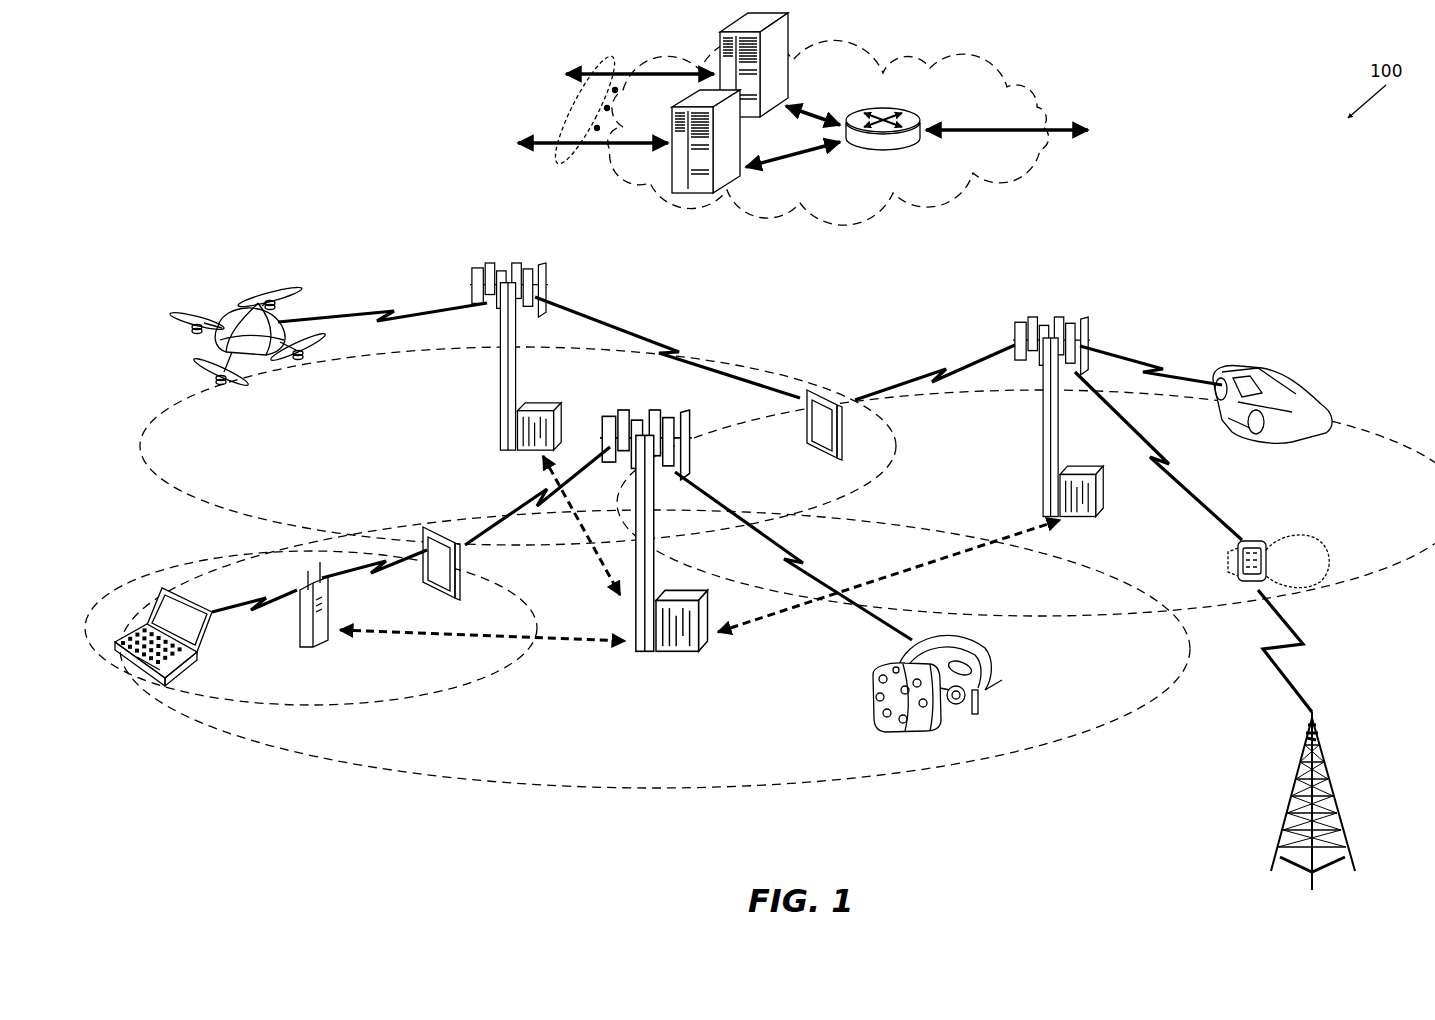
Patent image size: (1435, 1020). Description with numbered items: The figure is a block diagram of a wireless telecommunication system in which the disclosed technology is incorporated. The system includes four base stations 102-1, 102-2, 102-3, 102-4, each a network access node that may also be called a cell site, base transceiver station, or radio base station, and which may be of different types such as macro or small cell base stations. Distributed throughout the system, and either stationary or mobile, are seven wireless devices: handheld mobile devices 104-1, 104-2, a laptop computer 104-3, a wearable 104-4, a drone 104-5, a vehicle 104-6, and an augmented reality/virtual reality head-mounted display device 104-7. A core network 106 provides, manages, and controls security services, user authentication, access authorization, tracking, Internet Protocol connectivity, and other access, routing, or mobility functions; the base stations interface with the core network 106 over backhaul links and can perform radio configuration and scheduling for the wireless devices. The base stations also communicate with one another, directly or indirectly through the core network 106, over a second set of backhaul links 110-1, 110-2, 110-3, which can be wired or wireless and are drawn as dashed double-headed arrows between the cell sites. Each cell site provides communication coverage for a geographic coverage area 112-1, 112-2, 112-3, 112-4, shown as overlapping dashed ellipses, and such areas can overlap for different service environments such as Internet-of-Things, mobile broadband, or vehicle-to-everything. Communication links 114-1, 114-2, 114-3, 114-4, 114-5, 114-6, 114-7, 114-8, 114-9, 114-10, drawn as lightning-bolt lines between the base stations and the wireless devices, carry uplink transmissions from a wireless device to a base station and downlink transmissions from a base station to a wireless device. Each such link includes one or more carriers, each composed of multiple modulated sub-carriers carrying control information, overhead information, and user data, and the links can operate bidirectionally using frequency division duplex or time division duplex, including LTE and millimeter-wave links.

The base station 102-1 is at (640, 650).
The base station 102-2 is at (500, 406).
The base station 102-3 is at (1040, 425).
The base station 102-4 is at (298, 637).
The wireless device 104-1 is at (505, 547).
The wireless device 104-2 is at (803, 435).
The wireless device 104-3 is at (140, 675).
The wireless device 104-4 is at (1262, 540).
The wireless device 104-5 is at (258, 360).
The wireless device 104-6 is at (1300, 382).
The wireless device 104-7 is at (982, 670).
The core network 106 is at (920, 205).
The backhaul link 110-1 is at (375, 635).
The backhaul link 110-2 is at (960, 570).
The backhaul link 110-3 is at (600, 555).
The geographic coverage area 112-1 is at (565, 790).
The geographic coverage area 112-2 is at (432, 700).
The geographic coverage area 112-3 is at (195, 505).
The geographic coverage area 112-4 is at (1350, 432).
The communication link 114-1 is at (852, 548).
The communication link 114-2 is at (532, 505).
The communication link 114-3 is at (250, 605).
The communication link 114-4 is at (370, 575).
The communication link 114-5 is at (385, 310).
The communication link 114-6 is at (672, 350).
The communication link 114-7 is at (930, 372).
The communication link 114-8 is at (1225, 463).
The communication link 114-9 is at (1148, 363).
The communication link 114-10 is at (1342, 655).